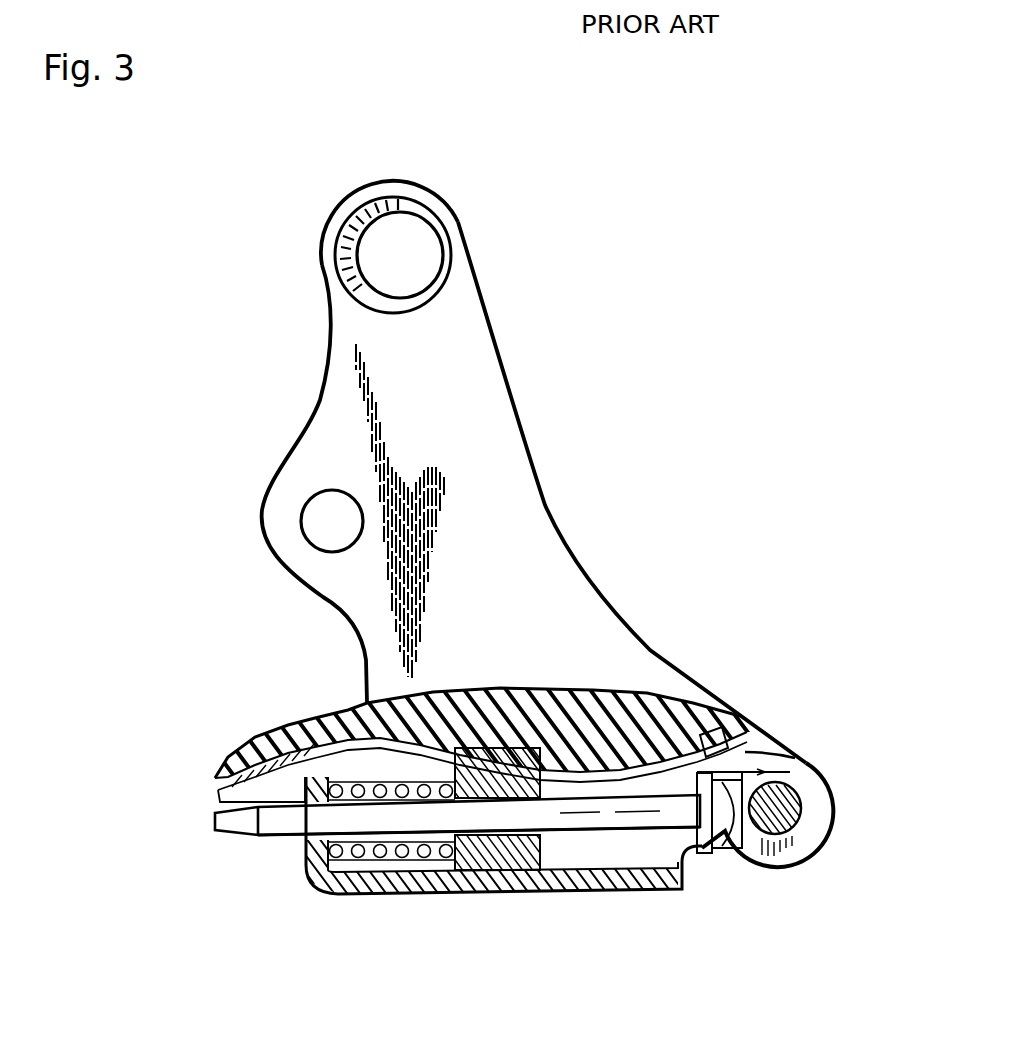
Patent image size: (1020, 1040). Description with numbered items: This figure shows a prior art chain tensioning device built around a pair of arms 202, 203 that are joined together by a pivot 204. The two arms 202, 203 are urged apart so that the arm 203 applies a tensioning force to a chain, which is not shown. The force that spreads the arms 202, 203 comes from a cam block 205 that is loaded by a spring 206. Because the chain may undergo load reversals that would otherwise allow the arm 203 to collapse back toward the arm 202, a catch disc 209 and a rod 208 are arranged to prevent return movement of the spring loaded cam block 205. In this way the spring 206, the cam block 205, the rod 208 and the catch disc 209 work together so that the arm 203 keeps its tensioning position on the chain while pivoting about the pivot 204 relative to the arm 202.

The arm 202 is at (605, 882).
The arm 203 is at (753, 712).
The pivot 204 is at (797, 838).
The cam block 205 is at (350, 706).
The spring 206 is at (325, 878).
The rod 208 is at (313, 815).
The catch disc 209 is at (487, 878).